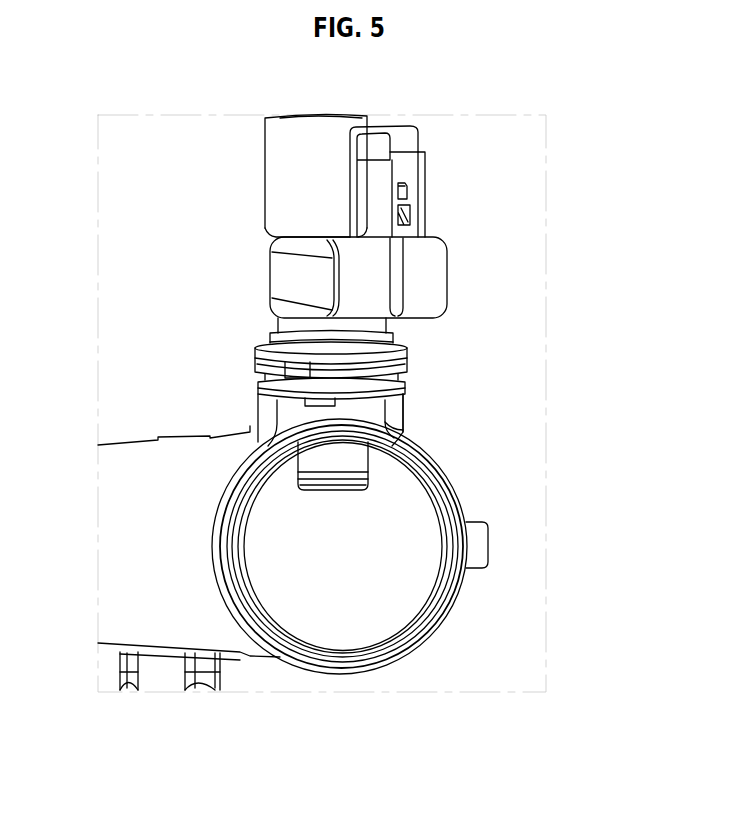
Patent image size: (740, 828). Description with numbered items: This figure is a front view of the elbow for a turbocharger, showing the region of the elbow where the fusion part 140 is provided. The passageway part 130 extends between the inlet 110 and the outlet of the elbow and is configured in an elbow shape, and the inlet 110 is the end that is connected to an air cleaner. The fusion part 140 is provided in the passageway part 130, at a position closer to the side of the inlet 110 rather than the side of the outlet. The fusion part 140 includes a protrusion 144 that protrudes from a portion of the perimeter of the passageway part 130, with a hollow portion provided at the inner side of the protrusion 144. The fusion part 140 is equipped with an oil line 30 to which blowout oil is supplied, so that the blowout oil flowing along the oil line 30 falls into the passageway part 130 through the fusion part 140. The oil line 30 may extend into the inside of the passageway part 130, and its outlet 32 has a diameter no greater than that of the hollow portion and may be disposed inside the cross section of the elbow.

The oil line 30 is at (430, 273).
The outlet of the oil line 32 is at (338, 490).
The fusion part 140 is at (252, 404).
The protrusion 144 is at (395, 402).
The inlet 110 is at (392, 558).
The passageway part 130 is at (160, 593).